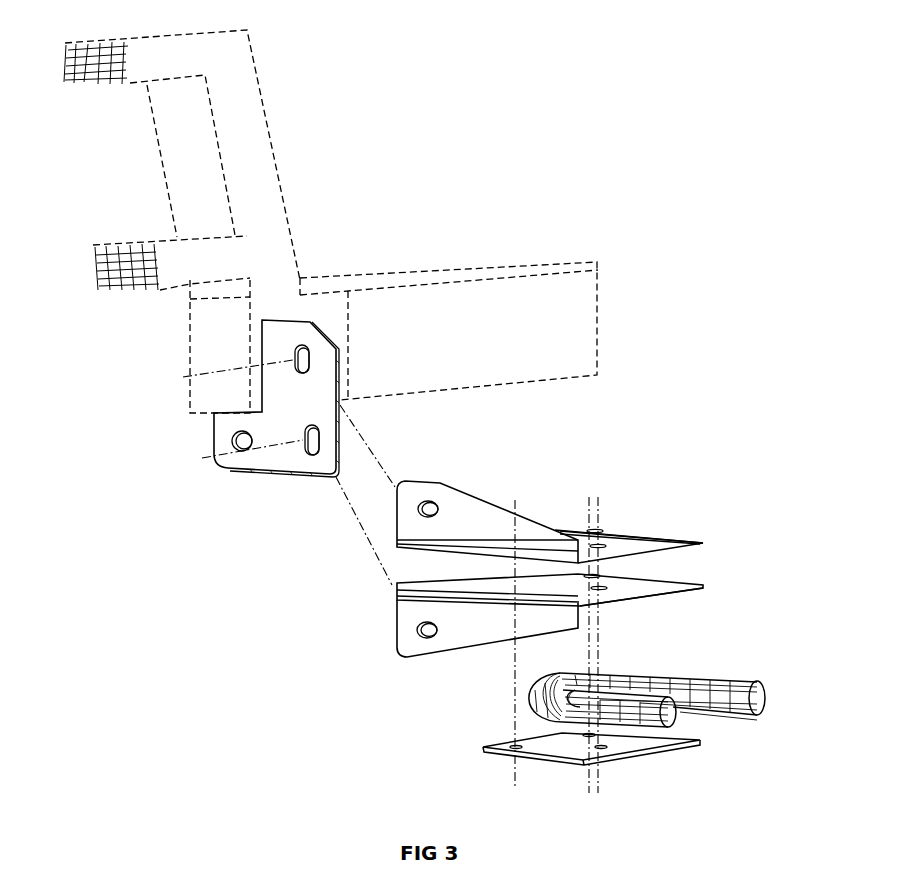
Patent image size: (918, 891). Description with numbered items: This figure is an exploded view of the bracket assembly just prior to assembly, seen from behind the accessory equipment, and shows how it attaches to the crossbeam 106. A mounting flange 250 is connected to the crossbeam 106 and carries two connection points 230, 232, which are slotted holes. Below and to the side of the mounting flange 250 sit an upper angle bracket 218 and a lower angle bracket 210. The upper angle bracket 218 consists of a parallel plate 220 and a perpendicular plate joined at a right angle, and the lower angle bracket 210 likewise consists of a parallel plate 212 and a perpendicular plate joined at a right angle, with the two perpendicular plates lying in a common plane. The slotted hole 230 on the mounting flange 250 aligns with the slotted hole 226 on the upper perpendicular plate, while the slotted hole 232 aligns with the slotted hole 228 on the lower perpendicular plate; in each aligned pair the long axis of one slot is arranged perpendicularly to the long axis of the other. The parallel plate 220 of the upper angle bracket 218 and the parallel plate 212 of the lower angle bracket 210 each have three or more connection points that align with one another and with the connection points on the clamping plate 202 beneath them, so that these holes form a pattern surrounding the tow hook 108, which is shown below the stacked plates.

The crossbeam 106 is at (412, 270).
The tow hook 108 is at (745, 680).
The clamping plate 202 is at (480, 749).
The lower angle bracket 210 is at (703, 587).
The parallel plate 212 is at (572, 598).
The upper angle bracket 218 is at (703, 542).
The parallel plate 220 is at (550, 489).
The connection point 226 is at (432, 503).
The connection point 228 is at (428, 640).
The connection point 230 is at (298, 347).
The connection point 232 is at (310, 427).
The mounting flange 250 is at (311, 468).